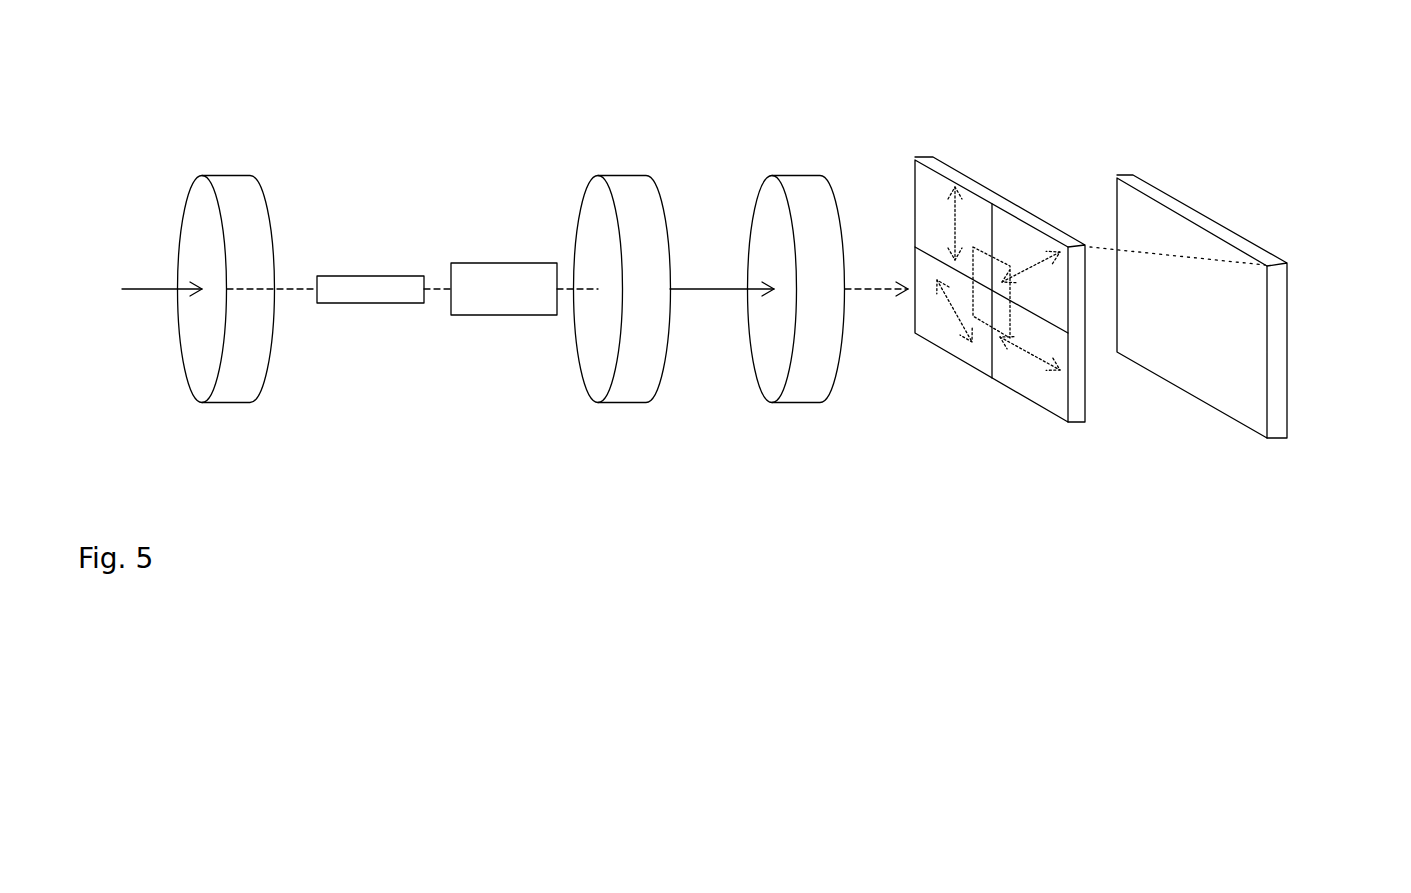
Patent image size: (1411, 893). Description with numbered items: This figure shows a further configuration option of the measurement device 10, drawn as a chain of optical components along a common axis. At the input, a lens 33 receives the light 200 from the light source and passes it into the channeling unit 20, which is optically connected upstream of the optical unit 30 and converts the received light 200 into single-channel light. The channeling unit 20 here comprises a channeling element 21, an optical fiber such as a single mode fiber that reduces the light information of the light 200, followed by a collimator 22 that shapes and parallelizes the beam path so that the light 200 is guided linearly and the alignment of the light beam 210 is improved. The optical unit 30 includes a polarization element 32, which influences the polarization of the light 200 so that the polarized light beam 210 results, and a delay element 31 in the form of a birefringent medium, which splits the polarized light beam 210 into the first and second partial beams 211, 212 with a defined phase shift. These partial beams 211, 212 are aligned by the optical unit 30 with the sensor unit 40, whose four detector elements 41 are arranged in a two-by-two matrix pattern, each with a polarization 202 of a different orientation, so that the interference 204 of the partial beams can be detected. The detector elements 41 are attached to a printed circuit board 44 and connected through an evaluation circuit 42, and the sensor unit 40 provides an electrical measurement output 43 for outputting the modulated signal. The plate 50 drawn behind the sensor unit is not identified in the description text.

The measurement device 10 is at (157, 142).
The light 200 is at (130, 289).
The lens 33 is at (243, 383).
The channeling unit 20 is at (567, 159).
The channeling element 21 is at (376, 282).
The collimator 22 is at (465, 305).
The polarization element 32 is at (637, 385).
The optical unit 30 is at (819, 117).
The light beam 210 is at (693, 289).
The delay element 31 is at (806, 380).
The first partial beam 211 is at (898, 351).
The second partial beam 212 is at (865, 288).
The sensor unit 40 is at (1028, 129).
The detector elements 41 is at (921, 268).
The evaluation circuit 42 is at (1050, 227).
The printed circuit board 44 is at (1033, 278).
The polarization 202 is at (955, 223).
The interference 204 is at (977, 243).
The detector 50 is at (1197, 242).
The electrical measurement output 43 is at (1230, 262).